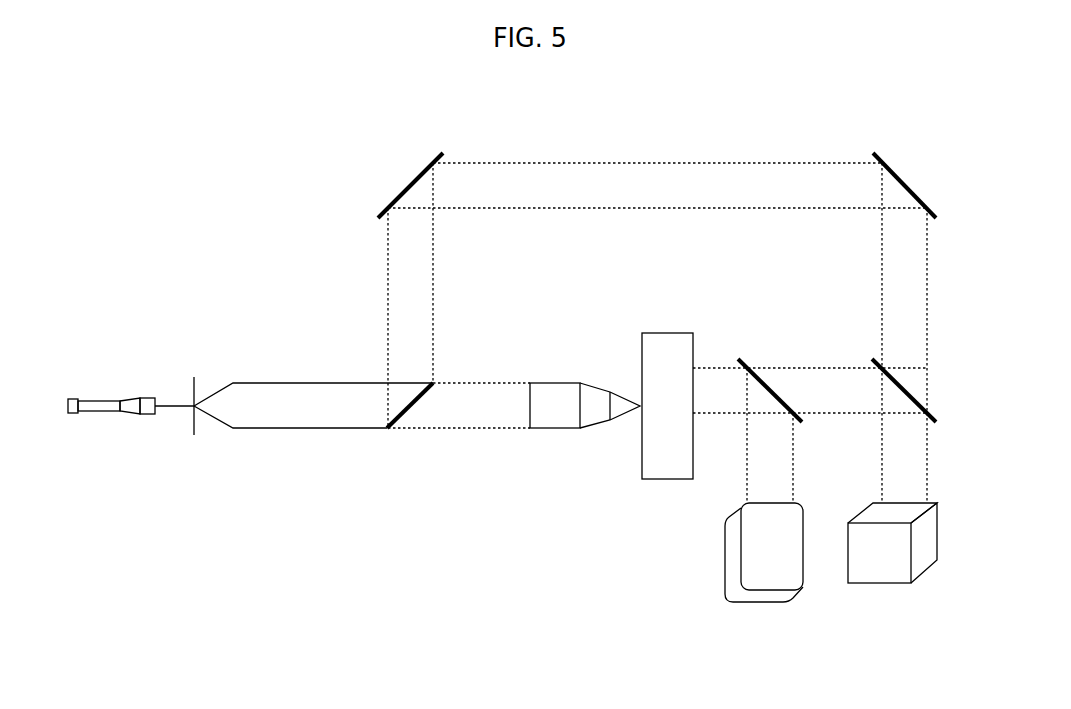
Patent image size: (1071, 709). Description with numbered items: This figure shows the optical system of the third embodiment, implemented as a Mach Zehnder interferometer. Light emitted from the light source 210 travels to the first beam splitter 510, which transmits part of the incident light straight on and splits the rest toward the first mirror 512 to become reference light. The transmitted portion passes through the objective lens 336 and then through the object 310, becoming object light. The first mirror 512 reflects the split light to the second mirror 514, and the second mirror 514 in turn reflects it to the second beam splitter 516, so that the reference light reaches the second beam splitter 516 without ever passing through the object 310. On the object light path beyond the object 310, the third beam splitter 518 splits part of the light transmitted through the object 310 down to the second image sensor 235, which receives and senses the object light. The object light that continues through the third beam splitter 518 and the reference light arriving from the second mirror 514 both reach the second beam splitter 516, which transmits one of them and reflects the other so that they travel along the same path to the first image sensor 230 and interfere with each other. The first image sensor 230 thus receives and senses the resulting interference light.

The light source 210 is at (97, 396).
The first mirror 512 is at (408, 184).
The second mirror 514 is at (905, 182).
The first beam splitter 510 is at (413, 408).
The objective lens 336 is at (562, 430).
The object 310 is at (665, 465).
The third beam splitter 518 is at (760, 390).
The second beam splitter 516 is at (910, 385).
The second image sensor 235 is at (760, 603).
The first image sensor 230 is at (880, 585).